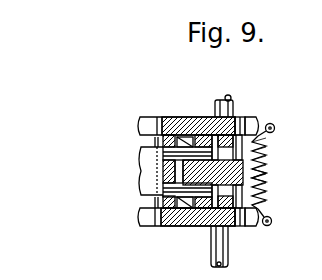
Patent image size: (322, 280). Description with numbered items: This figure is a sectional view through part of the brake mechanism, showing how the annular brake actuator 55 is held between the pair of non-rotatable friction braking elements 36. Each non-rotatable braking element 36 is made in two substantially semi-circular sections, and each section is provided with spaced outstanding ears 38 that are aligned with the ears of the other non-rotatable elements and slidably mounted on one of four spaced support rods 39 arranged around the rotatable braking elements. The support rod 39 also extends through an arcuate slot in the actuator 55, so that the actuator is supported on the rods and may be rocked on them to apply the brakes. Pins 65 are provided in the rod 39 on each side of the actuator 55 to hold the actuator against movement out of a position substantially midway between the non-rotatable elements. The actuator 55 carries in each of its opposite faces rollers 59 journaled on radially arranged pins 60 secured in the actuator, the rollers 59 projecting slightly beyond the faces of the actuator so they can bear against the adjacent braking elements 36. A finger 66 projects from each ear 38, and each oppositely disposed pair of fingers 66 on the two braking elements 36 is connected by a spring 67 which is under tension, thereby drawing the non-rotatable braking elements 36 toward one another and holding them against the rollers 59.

The non-rotatable friction braking element 36 is at (188, 117).
The ear 38 is at (243, 120).
The support rod 39 is at (219, 111).
The brake actuator 55 is at (148, 176).
The roller 59 is at (162, 141).
The pin 60 is at (163, 151).
The pin 65 is at (265, 153).
The finger 66 is at (274, 124).
The spring 67 is at (264, 176).